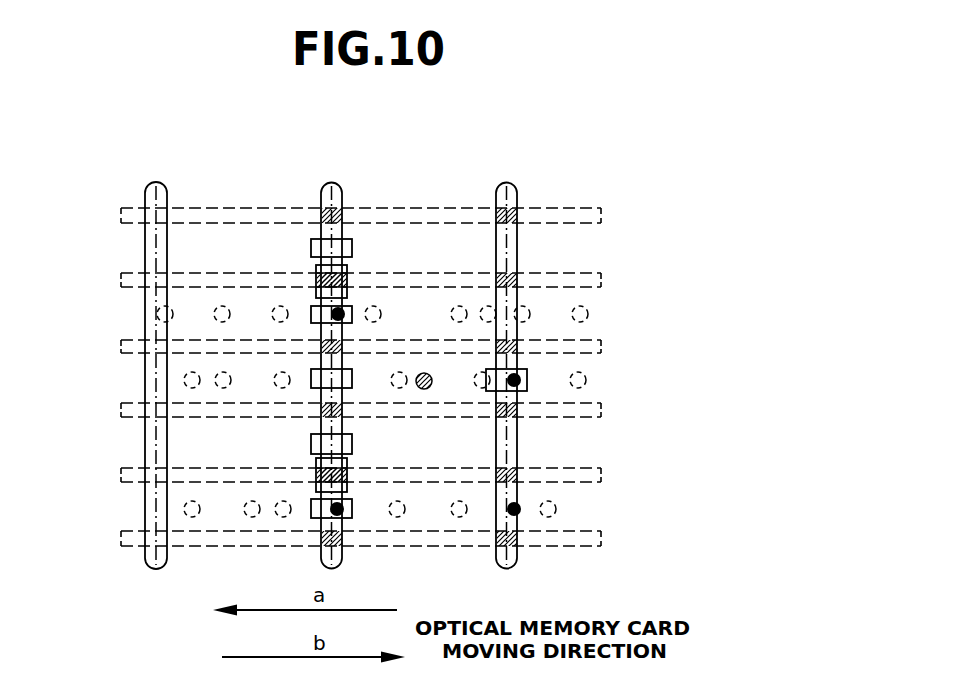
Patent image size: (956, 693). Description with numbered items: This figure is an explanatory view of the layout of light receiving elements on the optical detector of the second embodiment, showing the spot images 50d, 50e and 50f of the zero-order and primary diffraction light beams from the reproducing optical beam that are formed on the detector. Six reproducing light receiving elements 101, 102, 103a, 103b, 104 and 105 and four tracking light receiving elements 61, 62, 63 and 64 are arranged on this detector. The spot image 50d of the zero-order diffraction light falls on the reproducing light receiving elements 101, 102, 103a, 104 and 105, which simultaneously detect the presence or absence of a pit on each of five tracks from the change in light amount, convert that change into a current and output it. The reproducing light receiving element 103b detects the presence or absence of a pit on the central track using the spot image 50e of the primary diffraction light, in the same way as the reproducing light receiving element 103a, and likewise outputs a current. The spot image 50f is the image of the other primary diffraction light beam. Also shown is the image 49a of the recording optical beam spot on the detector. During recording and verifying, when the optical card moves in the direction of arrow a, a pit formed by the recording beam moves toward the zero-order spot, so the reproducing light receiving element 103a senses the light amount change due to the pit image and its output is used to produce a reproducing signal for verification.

The spot image of the O-order diffraction light 50d is at (322, 188).
The spot image of the primary diffraction light 50e is at (517, 190).
The spot image of the primary diffraction light 50f is at (143, 181).
The tracking light receiving element 61 is at (347, 266).
The tracking light receiving element 62 is at (347, 297).
The tracking light receiving element 63 is at (348, 463).
The tracking light receiving element 64 is at (347, 487).
The reproducing light receiving element 101 is at (311, 248).
The reproducing light receiving element 102 is at (311, 312).
The reproducing light receiving element 103a is at (311, 378).
The reproducing light receiving element 103b is at (527, 381).
The reproducing light receiving element 104 is at (311, 444).
The reproducing light receiving element 105 is at (311, 508).
The image of the recording optical beam spot 49a is at (431, 386).